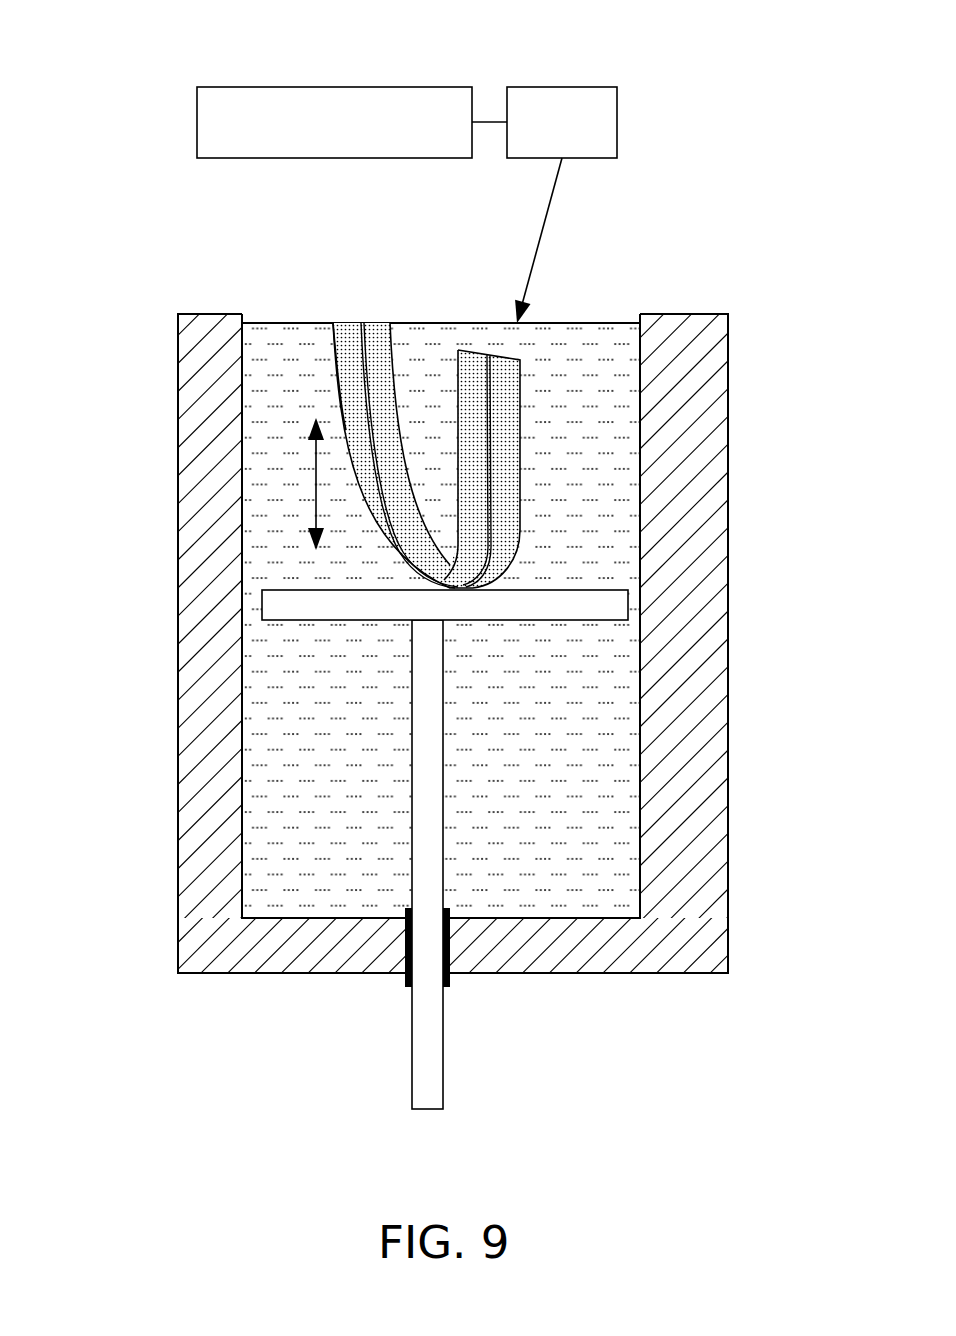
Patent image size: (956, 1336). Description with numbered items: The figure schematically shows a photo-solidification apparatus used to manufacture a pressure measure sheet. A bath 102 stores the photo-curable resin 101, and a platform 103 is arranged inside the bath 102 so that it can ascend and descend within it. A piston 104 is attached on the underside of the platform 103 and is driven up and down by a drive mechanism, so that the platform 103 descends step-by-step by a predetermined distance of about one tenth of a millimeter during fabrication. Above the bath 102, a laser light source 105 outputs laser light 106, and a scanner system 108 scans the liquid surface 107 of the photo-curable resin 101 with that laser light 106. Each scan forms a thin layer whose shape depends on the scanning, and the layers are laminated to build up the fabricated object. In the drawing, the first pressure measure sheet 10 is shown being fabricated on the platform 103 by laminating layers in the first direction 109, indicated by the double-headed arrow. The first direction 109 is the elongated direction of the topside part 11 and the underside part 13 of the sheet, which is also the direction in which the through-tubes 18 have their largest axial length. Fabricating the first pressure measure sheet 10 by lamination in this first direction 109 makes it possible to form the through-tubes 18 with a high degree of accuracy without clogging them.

The first pressure measure sheet 10 is at (437, 409).
The topside part 11 is at (335, 405).
The through-tubes 18 is at (360, 348).
The underside part 13 is at (523, 500).
The photo-curable resin 101 is at (613, 427).
The bath 102 is at (178, 640).
The platform 103 is at (595, 590).
The piston 104 is at (443, 1018).
The laser light source 105 is at (371, 87).
The laser light 106 is at (552, 195).
The liquid surface 107 is at (578, 323).
The scanner system 108 is at (560, 87).
The first direction 109 is at (313, 515).